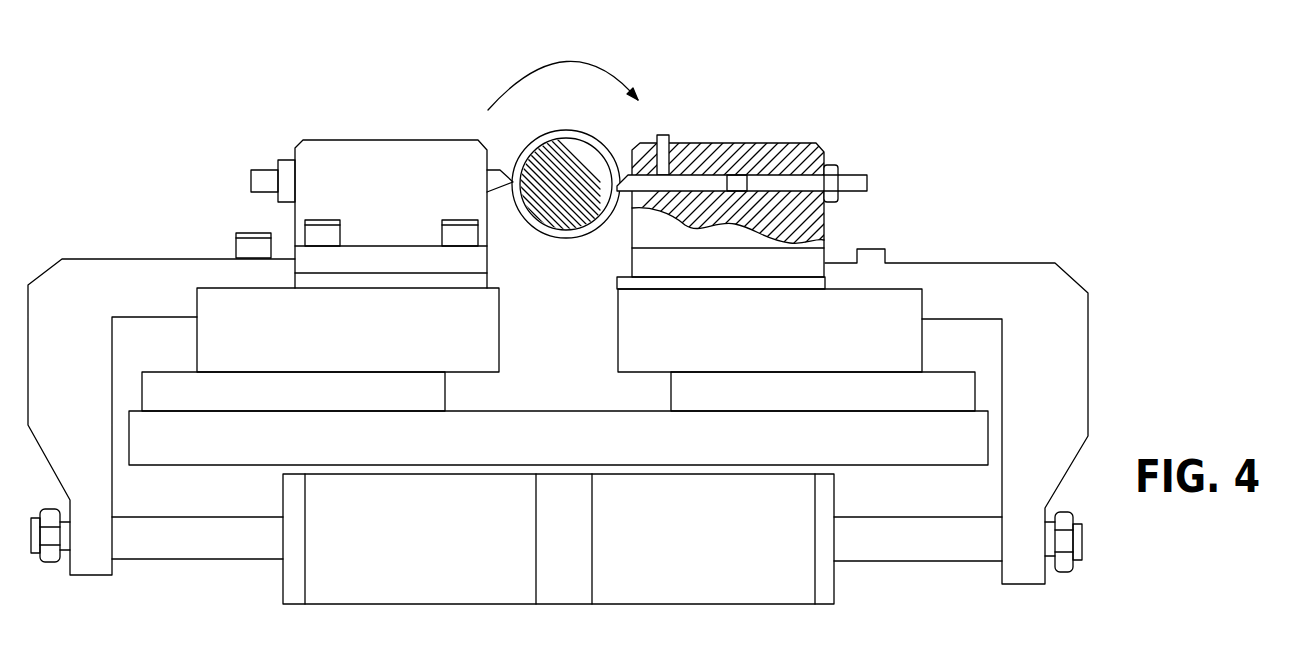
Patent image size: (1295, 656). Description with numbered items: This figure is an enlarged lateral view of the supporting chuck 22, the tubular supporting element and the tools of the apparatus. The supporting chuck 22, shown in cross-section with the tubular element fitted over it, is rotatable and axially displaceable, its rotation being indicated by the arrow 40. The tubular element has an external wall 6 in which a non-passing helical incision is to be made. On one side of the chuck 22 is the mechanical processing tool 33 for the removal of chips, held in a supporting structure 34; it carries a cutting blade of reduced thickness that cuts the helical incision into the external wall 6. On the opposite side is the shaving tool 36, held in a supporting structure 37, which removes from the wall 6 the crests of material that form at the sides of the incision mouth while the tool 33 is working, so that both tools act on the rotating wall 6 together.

The external wall 6 is at (570, 130).
The supporting chuck 22 is at (567, 215).
The mechanical processing tool 33 is at (501, 170).
The supporting structure 34 is at (380, 138).
The shaving tool 36 is at (625, 195).
The supporting structure 37 is at (778, 140).
The arrow 40 is at (643, 52).